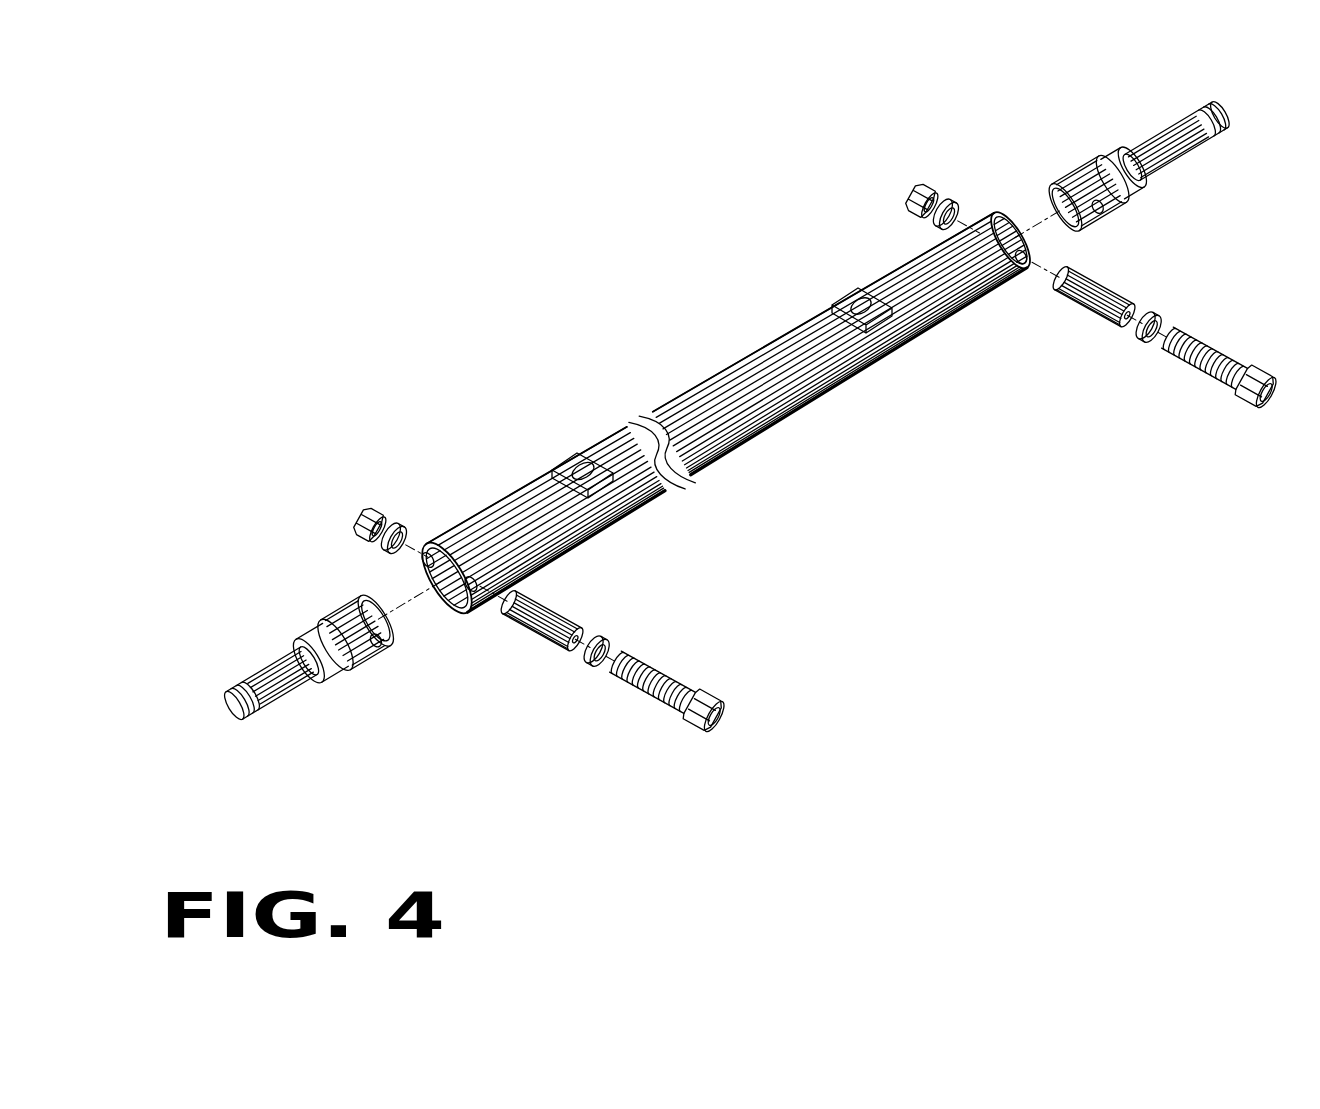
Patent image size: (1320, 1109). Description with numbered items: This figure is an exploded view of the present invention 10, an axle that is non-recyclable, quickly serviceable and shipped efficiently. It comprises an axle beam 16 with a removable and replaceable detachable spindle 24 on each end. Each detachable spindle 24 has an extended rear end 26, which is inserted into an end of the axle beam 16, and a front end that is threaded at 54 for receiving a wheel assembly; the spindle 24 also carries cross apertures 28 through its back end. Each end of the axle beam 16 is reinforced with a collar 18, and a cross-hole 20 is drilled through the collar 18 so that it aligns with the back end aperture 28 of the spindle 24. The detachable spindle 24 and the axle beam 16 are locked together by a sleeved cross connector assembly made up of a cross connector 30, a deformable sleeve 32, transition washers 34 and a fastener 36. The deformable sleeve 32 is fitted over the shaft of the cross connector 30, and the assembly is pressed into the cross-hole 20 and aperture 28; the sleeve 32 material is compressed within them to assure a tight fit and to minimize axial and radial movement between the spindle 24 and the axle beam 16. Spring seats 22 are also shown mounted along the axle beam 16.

The present invention 10 is at (719, 427).
The axle beam 16 is at (780, 422).
The collar 18 is at (460, 617).
The cross-hole 20 is at (482, 598).
The spring seats 22 is at (570, 458).
The detachable spindle 24 is at (330, 678).
The rear end 26 is at (347, 605).
The cross apertures 28 is at (373, 658).
The cross connector 30 is at (657, 697).
The deformable sleeve 32 is at (535, 603).
The transition washers 34 is at (385, 546).
The fastener 36 is at (362, 516).
The threaded front end 54 is at (245, 690).